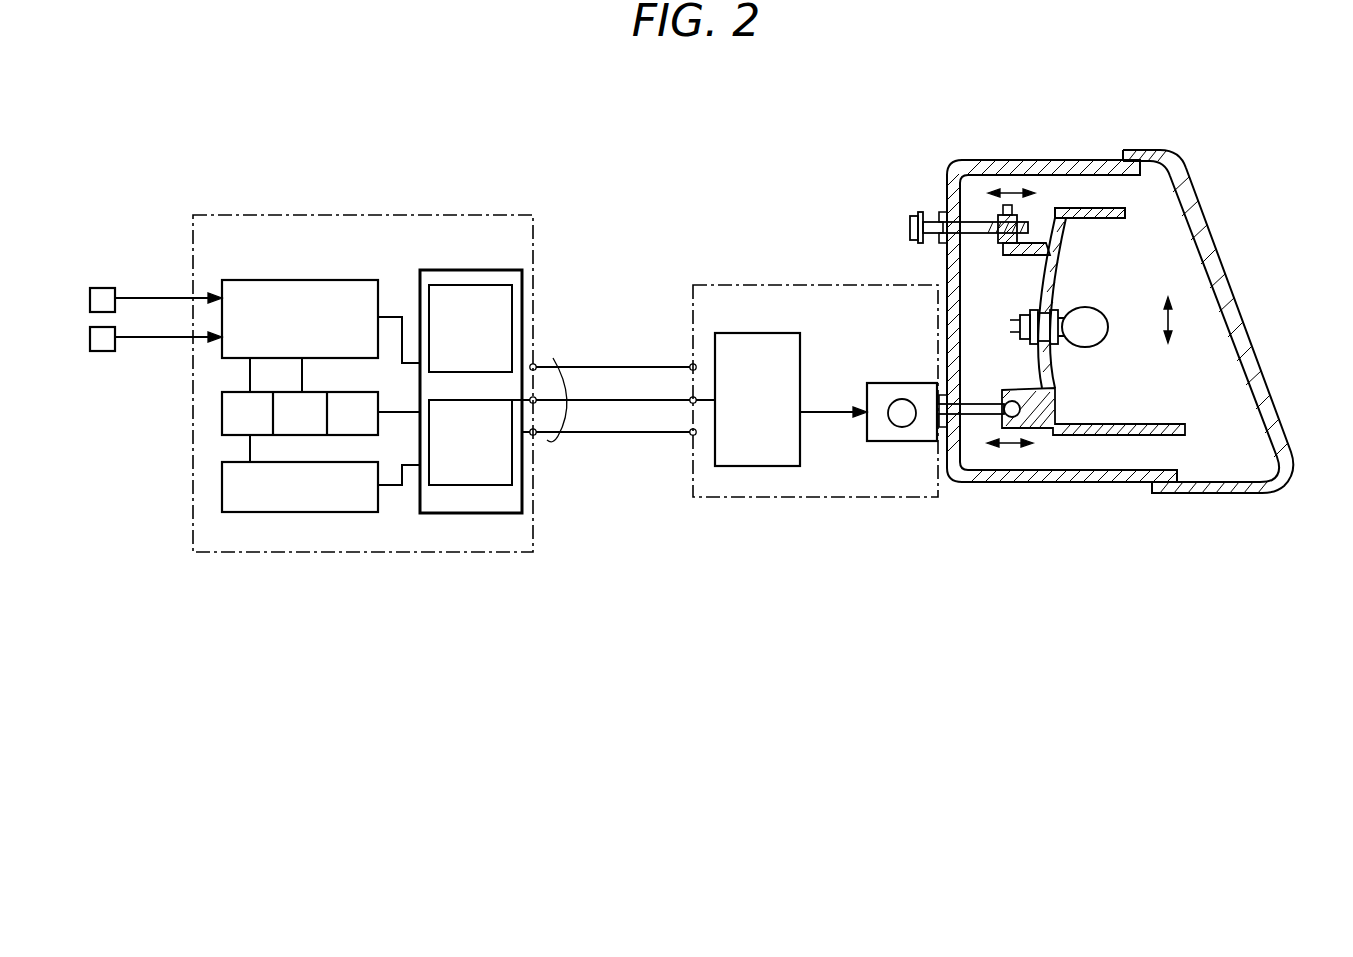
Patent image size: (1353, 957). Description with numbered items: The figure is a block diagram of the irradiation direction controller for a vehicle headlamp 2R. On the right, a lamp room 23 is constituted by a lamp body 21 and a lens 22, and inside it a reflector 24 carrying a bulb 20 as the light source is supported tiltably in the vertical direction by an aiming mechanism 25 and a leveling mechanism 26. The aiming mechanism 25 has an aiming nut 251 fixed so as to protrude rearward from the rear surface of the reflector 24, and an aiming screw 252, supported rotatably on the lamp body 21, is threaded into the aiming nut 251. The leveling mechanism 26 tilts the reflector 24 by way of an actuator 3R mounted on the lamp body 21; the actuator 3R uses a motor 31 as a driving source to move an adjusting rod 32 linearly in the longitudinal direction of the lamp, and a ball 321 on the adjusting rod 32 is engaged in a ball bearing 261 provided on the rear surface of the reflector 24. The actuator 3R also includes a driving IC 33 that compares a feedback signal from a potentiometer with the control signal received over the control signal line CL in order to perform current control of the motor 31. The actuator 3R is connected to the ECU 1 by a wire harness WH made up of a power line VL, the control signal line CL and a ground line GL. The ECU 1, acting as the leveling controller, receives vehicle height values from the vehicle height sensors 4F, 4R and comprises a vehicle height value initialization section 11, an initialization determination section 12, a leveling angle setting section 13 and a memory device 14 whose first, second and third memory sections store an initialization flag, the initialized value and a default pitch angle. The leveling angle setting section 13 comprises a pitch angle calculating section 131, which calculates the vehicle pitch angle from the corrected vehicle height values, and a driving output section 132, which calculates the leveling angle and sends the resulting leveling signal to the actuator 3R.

The ECU 1 is at (262, 214).
The vehicle height value initialization section 11 is at (358, 280).
The initialization determination section 12 is at (366, 513).
The leveling angle setting section 13 is at (498, 270).
The pitch angle calculating section 131 is at (442, 285).
The driving output section 132 is at (445, 486).
The memory device 14 is at (236, 392).
The vehicle height sensor 4F is at (102, 288).
The vehicle height sensor 4R is at (102, 351).
The wire harness WH is at (563, 378).
The power line VL is at (617, 366).
The control signal line CL is at (604, 392).
The ground line GL is at (617, 433).
The actuator 3R is at (708, 284).
The driving IC 33 is at (785, 333).
The motor 31 is at (888, 383).
The adjusting rod 32 is at (975, 404).
The ball 321 is at (1012, 400).
The headlamp 2R is at (1031, 145).
The lamp body 21 is at (1114, 483).
The lens 22 is at (1232, 293).
The lamp room 23 is at (1212, 461).
The reflector 24 is at (1050, 270).
The aiming mechanism 25 is at (975, 192).
The aiming screw 252 is at (912, 215).
The aiming nut 251 is at (1001, 244).
The leveling mechanism 26 is at (994, 460).
The ball bearing 261 is at (1037, 422).
The bulb 20 is at (1094, 347).